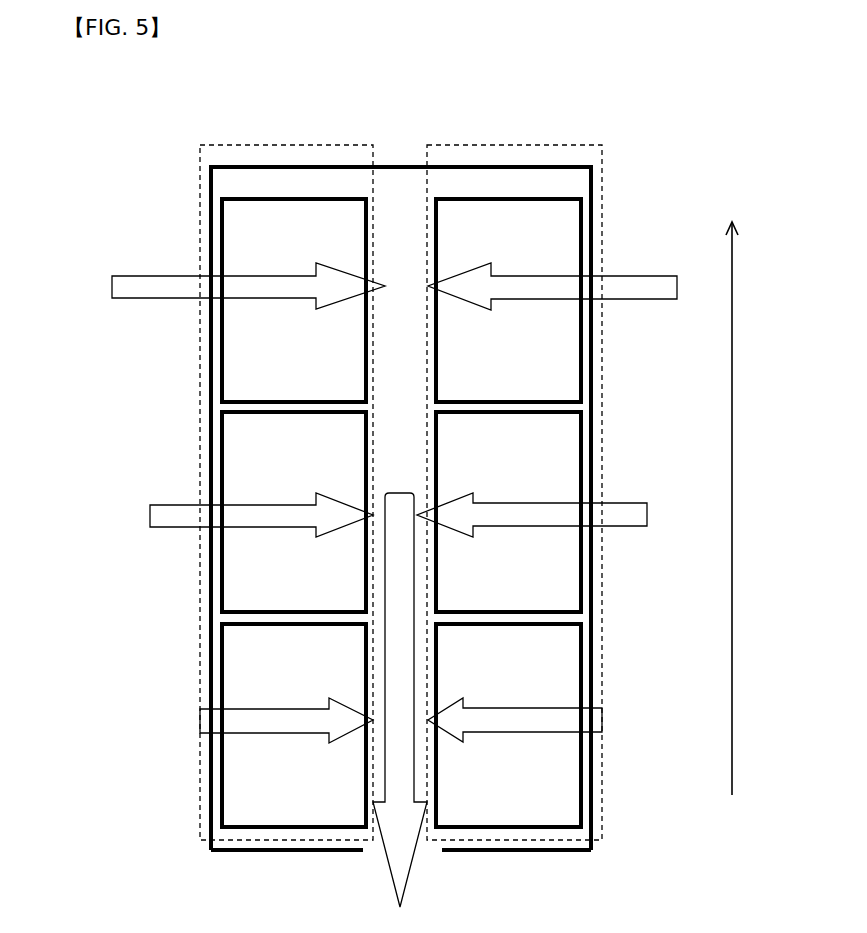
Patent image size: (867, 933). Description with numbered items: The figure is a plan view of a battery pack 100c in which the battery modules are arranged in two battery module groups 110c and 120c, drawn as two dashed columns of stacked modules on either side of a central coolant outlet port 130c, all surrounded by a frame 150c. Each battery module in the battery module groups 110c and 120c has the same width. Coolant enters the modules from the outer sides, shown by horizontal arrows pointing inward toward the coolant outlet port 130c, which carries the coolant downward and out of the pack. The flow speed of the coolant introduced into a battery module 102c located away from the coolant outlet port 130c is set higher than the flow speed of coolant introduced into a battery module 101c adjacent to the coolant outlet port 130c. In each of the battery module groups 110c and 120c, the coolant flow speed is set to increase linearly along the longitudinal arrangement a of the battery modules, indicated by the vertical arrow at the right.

The battery pack 100c is at (165, 170).
The battery module 101c is at (232, 773).
The battery module 102c is at (248, 514).
The battery module group 110c is at (195, 393).
The battery module group 120c is at (602, 392).
The coolant outlet port 130c is at (375, 852).
The module frame 150c is at (500, 167).
The longitudinal arrangement a is at (740, 508).